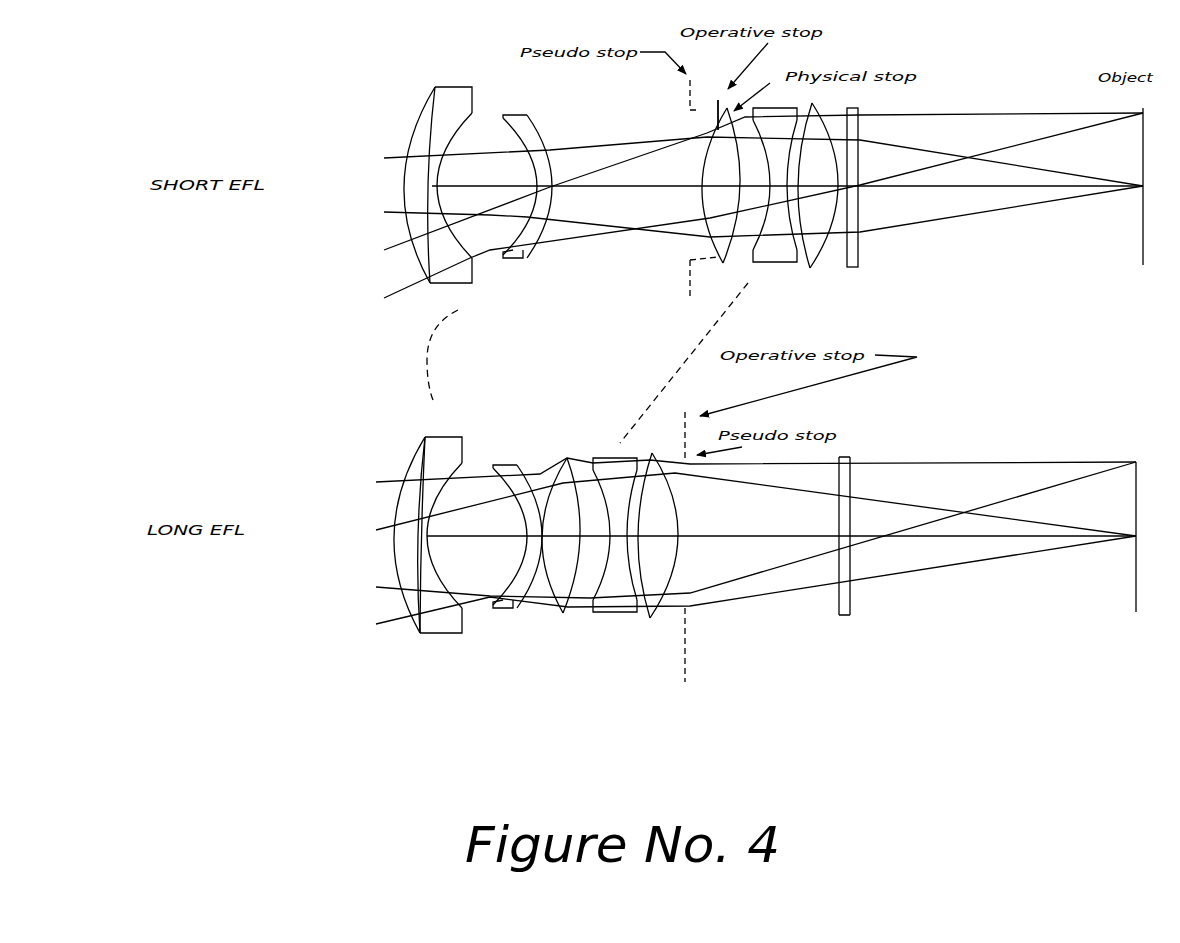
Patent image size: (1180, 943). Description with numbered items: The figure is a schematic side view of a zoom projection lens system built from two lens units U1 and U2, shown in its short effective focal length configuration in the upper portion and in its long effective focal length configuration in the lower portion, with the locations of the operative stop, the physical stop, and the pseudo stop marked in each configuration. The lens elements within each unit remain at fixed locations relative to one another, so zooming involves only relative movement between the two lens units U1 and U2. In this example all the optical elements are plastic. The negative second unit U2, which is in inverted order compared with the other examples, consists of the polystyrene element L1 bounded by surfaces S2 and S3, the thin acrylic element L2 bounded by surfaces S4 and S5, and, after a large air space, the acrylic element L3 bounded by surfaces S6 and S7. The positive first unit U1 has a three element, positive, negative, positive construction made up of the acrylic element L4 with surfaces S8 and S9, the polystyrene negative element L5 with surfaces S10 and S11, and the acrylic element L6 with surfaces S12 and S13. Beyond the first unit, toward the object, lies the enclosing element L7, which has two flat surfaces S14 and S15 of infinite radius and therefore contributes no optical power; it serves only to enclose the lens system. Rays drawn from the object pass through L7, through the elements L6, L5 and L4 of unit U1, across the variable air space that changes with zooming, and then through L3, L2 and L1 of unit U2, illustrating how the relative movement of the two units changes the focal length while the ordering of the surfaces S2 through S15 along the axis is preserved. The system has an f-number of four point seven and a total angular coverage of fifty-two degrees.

The first lens unit U1 is at (712, 82).
The second lens unit U2 is at (549, 95).
The lens element L1 is at (373, 575).
The lens element L2 is at (454, 576).
The lens element L3 is at (509, 552).
The lens element L4 is at (561, 585).
The lens element L5 is at (601, 542).
The lens element L6 is at (680, 584).
The enclosing plate L7 is at (843, 549).
The surface 2 S2 is at (394, 587).
The surface 3 S3 is at (418, 575).
The surface 4 S4 is at (424, 585).
The surface 5 S5 is at (447, 600).
The surface 6 S6 is at (516, 590).
The surface 7 S7 is at (523, 590).
The surface 8 S8 is at (548, 593).
The surface 9 S9 is at (562, 595).
The surface 10 S10 is at (607, 600).
The surface 11 S11 is at (623, 593).
The surface 12 S12 is at (662, 600).
The surface 13 S13 is at (687, 608).
The surface 14 S14 is at (838, 597).
The surface 15 S15 is at (850, 598).